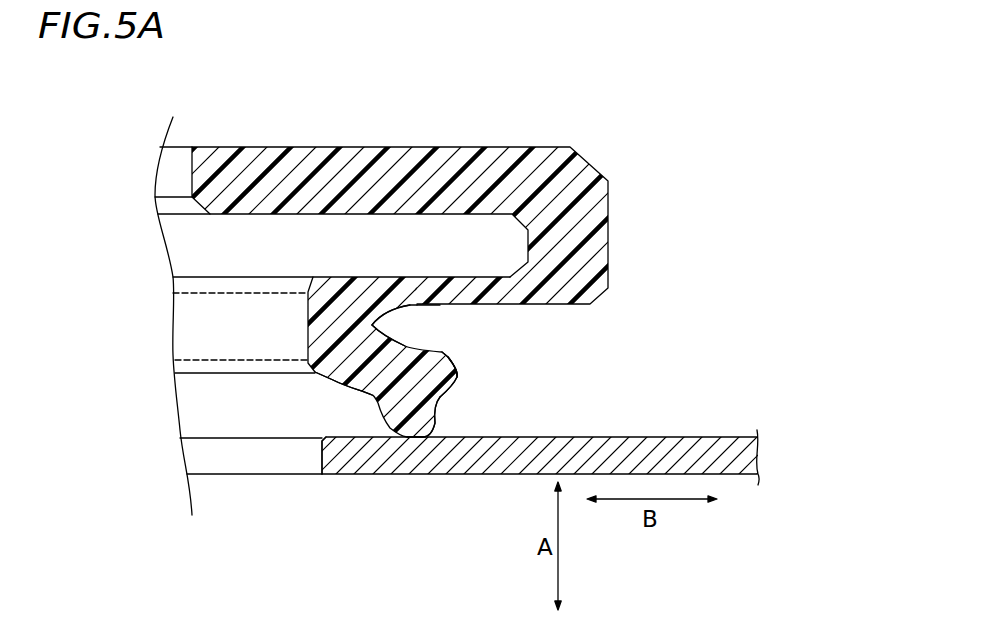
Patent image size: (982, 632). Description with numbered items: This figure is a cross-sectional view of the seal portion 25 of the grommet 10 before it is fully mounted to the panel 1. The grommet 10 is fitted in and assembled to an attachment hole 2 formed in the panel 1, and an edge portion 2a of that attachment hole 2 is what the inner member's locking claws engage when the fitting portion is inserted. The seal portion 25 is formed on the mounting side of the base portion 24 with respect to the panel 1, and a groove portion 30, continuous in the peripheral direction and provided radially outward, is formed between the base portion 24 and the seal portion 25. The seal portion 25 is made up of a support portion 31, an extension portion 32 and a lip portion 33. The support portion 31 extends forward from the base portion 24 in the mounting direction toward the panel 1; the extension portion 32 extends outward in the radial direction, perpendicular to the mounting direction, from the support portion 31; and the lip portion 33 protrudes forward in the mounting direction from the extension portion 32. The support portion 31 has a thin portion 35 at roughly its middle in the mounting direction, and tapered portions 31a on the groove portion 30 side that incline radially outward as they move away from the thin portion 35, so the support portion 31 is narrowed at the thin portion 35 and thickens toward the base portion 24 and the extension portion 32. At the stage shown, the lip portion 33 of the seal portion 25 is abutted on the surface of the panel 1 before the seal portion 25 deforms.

The panel 1 is at (711, 428).
The attachment hole 2 is at (206, 483).
The edge portion 2a is at (321, 457).
The grommet 10 is at (653, 135).
The base portion 24 is at (610, 262).
The seal portion 25 is at (476, 374).
The groove portion 30 is at (421, 318).
The support portion 31 is at (308, 345).
The tapered portion 31a is at (410, 305).
The extension portion 32 is at (344, 389).
The lip portion 33 is at (433, 410).
The thin portion 35 is at (363, 328).